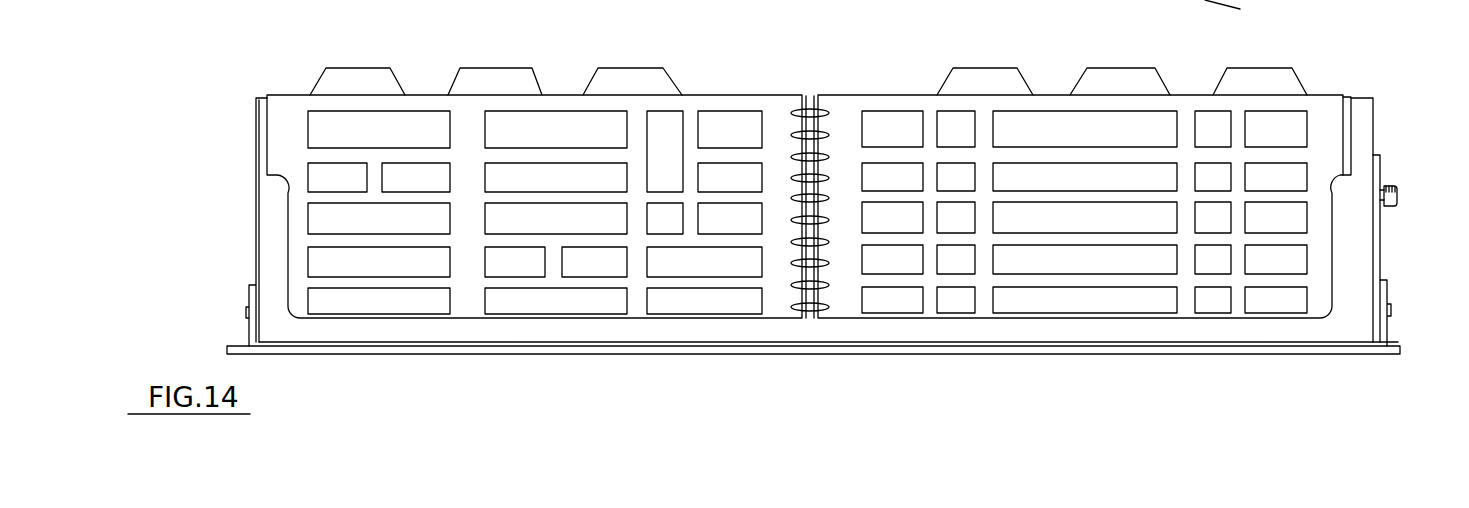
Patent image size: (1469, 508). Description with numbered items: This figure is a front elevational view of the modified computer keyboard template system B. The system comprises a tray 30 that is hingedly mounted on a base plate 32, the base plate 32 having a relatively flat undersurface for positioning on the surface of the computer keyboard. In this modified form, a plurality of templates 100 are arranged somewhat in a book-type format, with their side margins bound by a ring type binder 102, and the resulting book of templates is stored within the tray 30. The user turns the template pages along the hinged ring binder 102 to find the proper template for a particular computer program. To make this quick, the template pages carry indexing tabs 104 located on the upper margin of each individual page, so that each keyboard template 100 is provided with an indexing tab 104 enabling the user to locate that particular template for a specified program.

The templates 100 is at (283, 107).
The ring type binder 102 is at (807, 113).
The indexing tabs 104 is at (388, 73).
The tray 30 is at (1362, 128).
The computer keyboard template system B is at (1403, 148).
The base plate 32 is at (1398, 340).